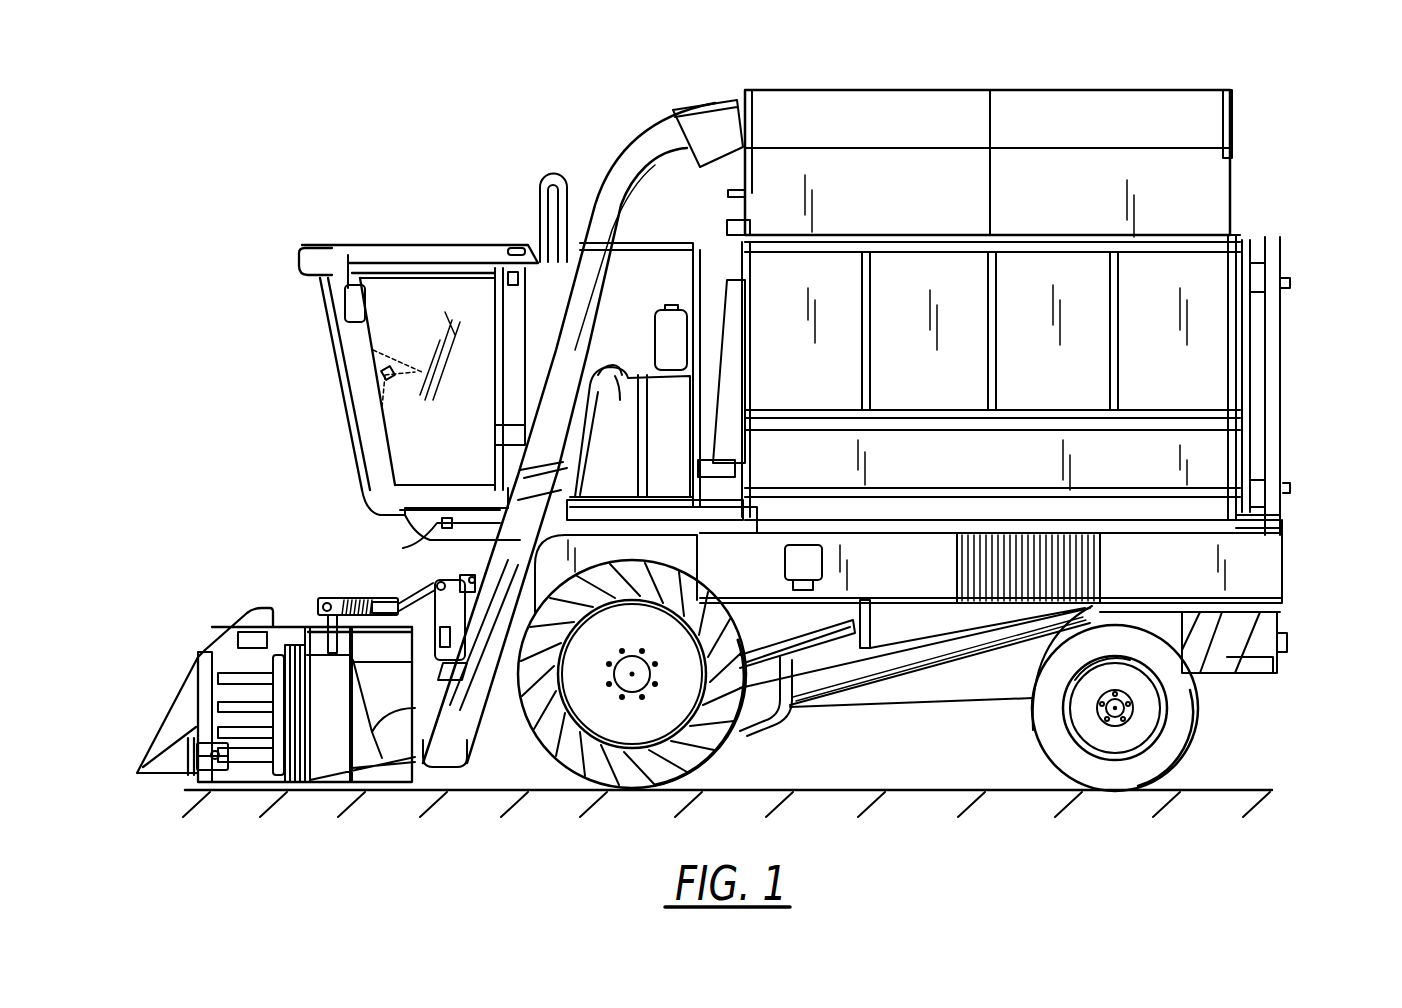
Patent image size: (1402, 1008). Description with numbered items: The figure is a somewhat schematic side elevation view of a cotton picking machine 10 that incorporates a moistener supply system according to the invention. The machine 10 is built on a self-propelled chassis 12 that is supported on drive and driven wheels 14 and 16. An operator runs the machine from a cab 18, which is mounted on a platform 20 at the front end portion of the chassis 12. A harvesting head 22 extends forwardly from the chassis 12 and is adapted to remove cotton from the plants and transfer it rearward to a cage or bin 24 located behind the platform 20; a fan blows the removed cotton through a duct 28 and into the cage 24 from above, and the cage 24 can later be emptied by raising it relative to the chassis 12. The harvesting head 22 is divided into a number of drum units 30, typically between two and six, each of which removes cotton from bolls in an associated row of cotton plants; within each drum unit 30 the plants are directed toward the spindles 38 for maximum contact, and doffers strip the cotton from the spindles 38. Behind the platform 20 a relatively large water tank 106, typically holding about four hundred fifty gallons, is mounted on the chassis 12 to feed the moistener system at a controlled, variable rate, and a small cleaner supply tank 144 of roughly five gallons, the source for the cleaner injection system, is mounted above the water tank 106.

The cotton picking machine 10 is at (865, 84).
The chassis 12 is at (1284, 590).
The drive wheels 14 is at (715, 760).
The driven wheels 16 is at (1185, 716).
The cab 18 is at (443, 252).
The platform 20 is at (445, 520).
The harvesting head 22 is at (220, 617).
The cage 24 is at (1232, 198).
The duct 28 is at (650, 135).
The drum unit 30 is at (198, 688).
The spindles 38 is at (255, 695).
The water tank 106 is at (622, 385).
The cleaner supply tank 144 is at (660, 312).